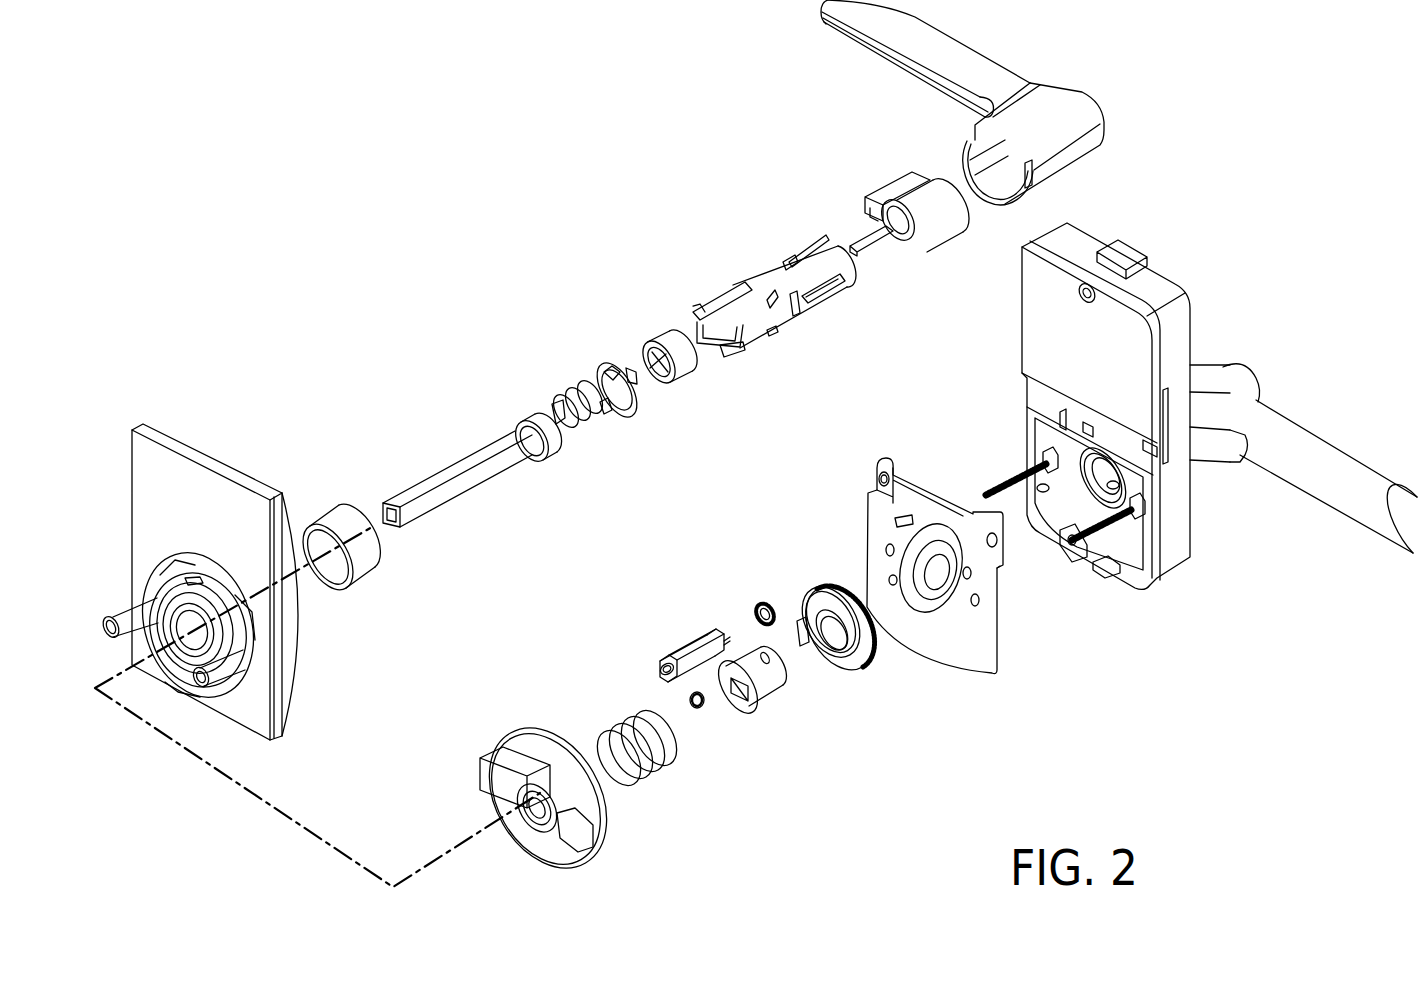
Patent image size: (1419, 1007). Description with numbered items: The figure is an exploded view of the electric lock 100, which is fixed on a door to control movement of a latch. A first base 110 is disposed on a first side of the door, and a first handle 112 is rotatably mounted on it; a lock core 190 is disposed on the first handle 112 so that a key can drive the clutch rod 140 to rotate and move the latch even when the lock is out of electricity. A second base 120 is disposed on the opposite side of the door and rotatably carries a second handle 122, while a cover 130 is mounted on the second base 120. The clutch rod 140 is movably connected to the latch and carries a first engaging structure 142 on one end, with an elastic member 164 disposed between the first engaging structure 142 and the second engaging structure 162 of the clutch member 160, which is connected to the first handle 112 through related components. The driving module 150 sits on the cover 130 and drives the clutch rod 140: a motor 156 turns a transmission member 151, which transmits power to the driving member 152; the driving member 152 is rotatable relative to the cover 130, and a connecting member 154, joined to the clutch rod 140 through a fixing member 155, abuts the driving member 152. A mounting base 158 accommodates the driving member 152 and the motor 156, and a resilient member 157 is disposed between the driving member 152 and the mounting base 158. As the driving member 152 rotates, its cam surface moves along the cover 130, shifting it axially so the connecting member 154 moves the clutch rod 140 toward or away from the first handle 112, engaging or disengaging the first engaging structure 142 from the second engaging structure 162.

The electric lock 100 is at (318, 158).
The first base 110 is at (157, 427).
The first handle 112 is at (978, 66).
The second base 120 is at (1153, 285).
The second handle 122 is at (1313, 453).
The cover 130 is at (973, 650).
The clutch rod 140 is at (458, 470).
The first engaging structure 142 is at (537, 403).
The driving module 150 is at (974, 729).
The transmission member 151 is at (773, 630).
The driving member 152 is at (875, 662).
The connecting member 154 is at (768, 680).
The fixing member 155 is at (673, 680).
The motor 156 is at (702, 707).
The resilient member 157 is at (653, 777).
The mounting base 158 is at (567, 860).
The clutch member 160 is at (624, 368).
The second engaging structure 162 is at (607, 357).
The elastic member 164 is at (567, 383).
The lock core 190 is at (897, 192).